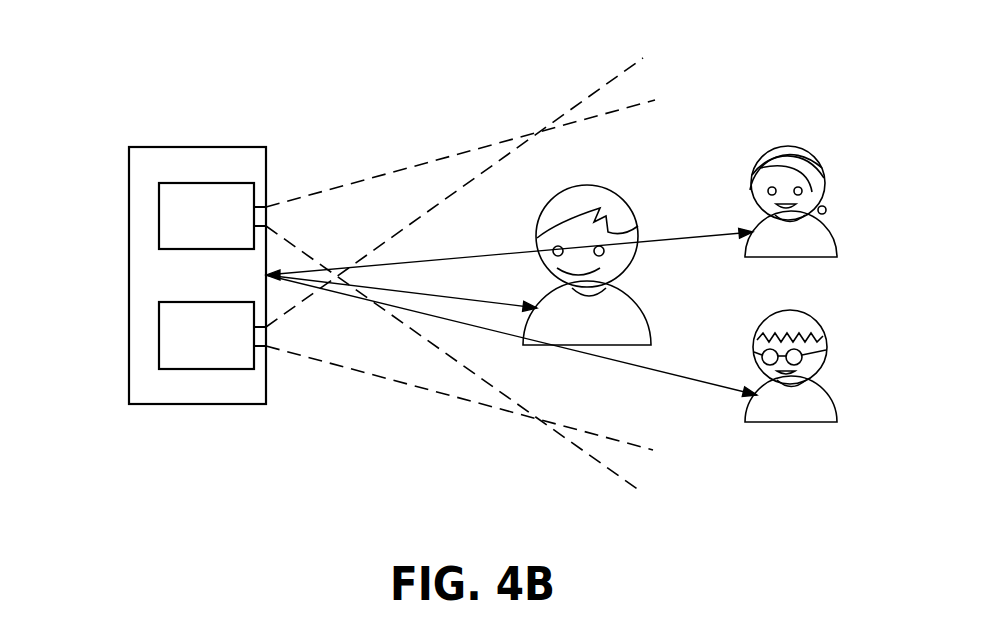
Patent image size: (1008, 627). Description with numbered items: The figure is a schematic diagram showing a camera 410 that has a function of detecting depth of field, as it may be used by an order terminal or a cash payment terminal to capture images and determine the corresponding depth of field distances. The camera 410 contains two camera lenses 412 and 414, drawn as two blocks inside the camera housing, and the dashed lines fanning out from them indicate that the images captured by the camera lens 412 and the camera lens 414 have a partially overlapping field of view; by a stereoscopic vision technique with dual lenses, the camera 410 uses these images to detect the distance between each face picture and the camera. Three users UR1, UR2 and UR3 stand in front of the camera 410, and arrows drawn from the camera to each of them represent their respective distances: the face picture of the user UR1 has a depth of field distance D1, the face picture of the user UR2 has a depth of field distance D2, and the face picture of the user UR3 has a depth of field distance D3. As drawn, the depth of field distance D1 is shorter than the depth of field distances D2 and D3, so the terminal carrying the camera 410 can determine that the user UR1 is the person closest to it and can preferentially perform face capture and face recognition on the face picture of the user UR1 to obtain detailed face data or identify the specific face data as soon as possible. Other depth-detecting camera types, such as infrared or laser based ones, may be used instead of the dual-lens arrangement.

The camera 410 is at (197, 147).
The camera lens 412 is at (159, 215).
The camera lens 414 is at (159, 333).
The user UR1 is at (588, 186).
The user UR2 is at (793, 310).
The user UR3 is at (793, 143).
The depth of field distance D1 is at (440, 295).
The depth of field distance D2 is at (700, 385).
The depth of field distance D3 is at (697, 233).